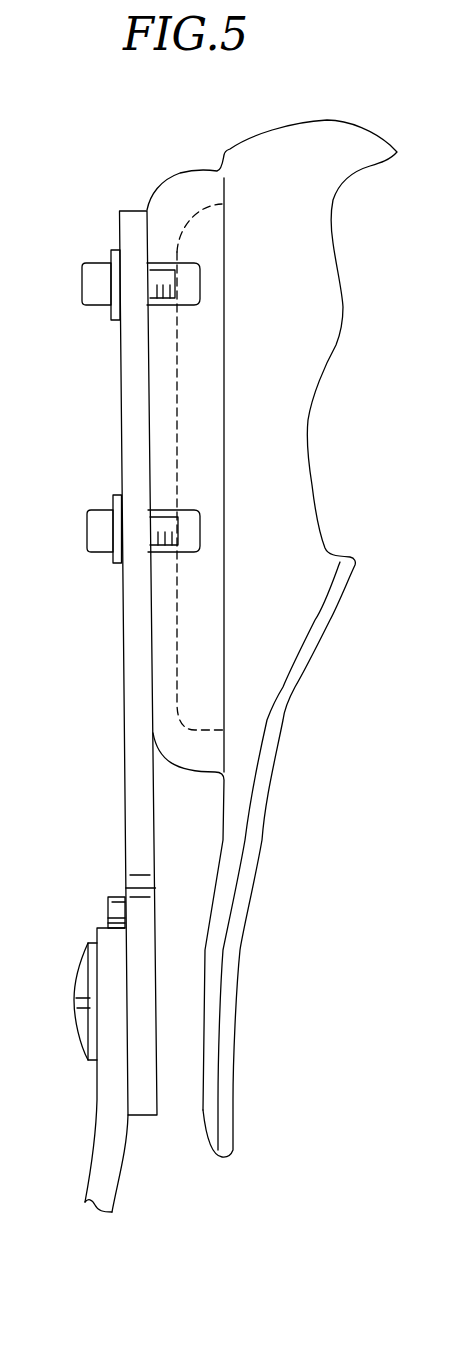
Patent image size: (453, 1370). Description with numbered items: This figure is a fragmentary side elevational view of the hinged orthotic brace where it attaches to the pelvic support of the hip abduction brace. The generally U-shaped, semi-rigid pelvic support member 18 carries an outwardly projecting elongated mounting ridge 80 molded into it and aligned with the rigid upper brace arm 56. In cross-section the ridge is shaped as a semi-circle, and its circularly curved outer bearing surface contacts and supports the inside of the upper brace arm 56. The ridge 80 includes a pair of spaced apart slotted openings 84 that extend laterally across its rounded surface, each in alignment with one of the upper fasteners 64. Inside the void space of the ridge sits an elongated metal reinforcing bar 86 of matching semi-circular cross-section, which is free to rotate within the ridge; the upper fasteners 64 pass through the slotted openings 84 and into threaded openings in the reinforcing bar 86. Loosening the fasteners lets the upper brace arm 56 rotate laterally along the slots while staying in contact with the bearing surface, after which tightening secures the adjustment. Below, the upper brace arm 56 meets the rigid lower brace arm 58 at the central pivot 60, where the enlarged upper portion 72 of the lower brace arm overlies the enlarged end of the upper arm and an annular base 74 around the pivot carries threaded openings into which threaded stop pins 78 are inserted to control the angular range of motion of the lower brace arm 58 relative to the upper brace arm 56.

The front pelvic support member 18 is at (287, 447).
The upper brace arm 56 is at (127, 823).
The lower brace arm 58 is at (100, 1175).
The central pivot 60 is at (80, 967).
The upper fasteners 64 is at (100, 268).
The enlarged upper portion of the lower brace arm 72 is at (0, 1004).
The annular base 74 is at (118, 957).
The threaded stop pins 78 is at (115, 912).
The mounting ridge 80 is at (198, 360).
The slotted openings 84 is at (150, 261).
The reinforcing bar 86 is at (188, 286).